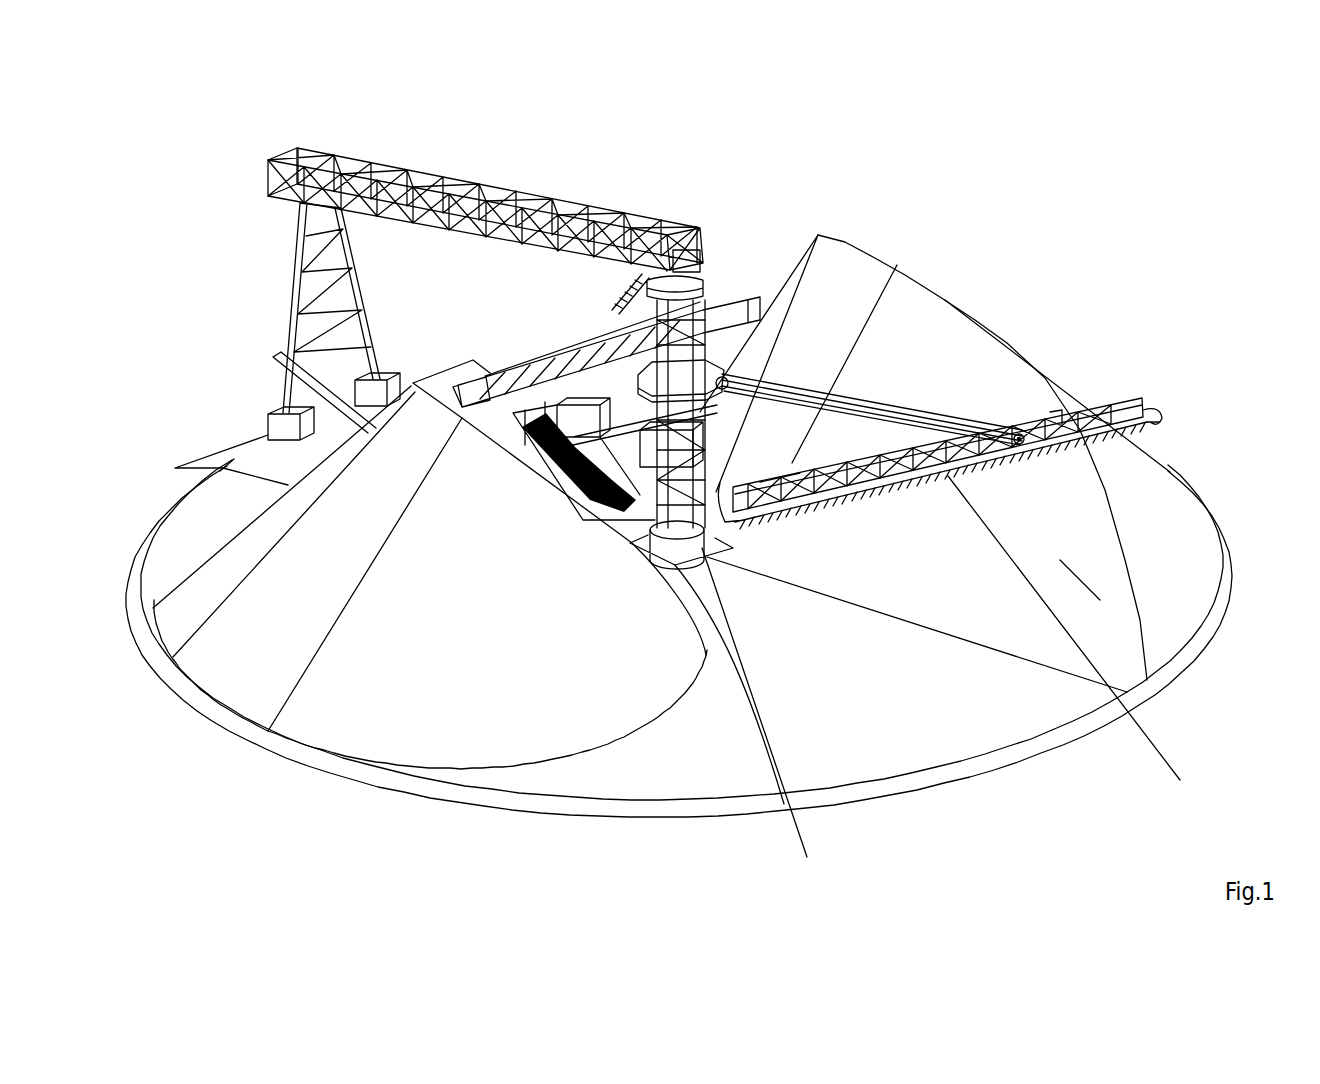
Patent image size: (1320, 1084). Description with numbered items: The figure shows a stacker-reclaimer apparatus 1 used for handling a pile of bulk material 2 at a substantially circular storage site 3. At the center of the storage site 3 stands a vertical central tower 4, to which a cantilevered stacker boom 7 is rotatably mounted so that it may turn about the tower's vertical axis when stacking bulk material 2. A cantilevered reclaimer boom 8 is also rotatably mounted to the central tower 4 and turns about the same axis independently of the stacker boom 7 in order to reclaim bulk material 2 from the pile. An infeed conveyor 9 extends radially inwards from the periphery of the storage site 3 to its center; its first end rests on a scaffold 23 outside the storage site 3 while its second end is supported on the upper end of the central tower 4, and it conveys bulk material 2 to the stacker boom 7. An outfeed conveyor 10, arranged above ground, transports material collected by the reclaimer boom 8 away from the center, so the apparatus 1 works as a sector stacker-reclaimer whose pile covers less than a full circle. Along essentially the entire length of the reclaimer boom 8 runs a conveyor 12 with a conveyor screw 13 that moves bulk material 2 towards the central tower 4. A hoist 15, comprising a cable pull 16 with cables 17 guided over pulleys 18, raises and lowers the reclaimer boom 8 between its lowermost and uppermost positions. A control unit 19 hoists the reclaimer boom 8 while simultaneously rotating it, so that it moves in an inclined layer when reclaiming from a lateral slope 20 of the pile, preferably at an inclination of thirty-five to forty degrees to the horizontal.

The stacker-reclaimer apparatus 1 is at (740, 177).
The pile of bulk material 2 is at (834, 238).
The circular storage site 3 is at (832, 756).
The central tower 4 is at (640, 400).
The stacker boom 7 is at (563, 356).
The reclaimer boom 8 is at (1110, 403).
The infeed conveyor 9 is at (490, 185).
The outfeed conveyor 10 is at (298, 368).
The conveyor 12 is at (1202, 782).
The conveyor screw 13 is at (1162, 424).
The hoist 15 is at (791, 477).
The cable pull 16 is at (935, 410).
The cables 17 is at (1021, 434).
The pulleys 18 is at (728, 383).
The control unit 19 is at (830, 863).
The lateral slope 20 is at (1078, 580).
The scaffold 23 is at (297, 287).